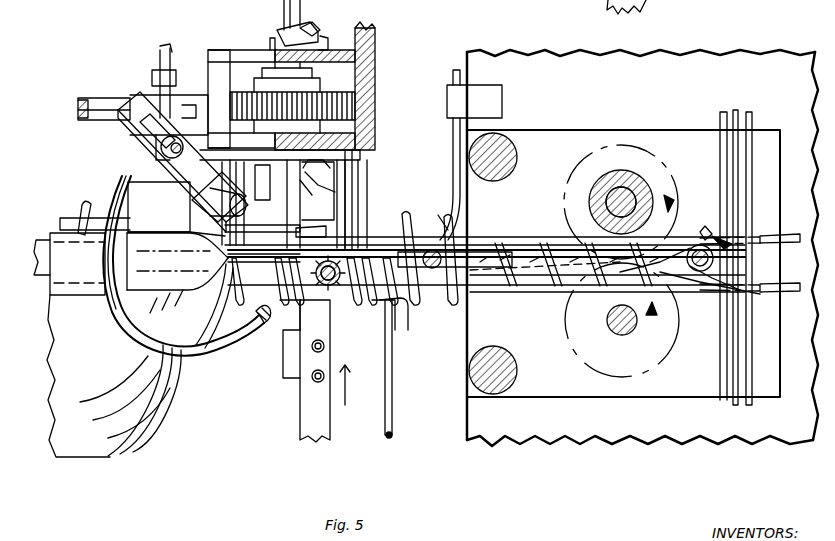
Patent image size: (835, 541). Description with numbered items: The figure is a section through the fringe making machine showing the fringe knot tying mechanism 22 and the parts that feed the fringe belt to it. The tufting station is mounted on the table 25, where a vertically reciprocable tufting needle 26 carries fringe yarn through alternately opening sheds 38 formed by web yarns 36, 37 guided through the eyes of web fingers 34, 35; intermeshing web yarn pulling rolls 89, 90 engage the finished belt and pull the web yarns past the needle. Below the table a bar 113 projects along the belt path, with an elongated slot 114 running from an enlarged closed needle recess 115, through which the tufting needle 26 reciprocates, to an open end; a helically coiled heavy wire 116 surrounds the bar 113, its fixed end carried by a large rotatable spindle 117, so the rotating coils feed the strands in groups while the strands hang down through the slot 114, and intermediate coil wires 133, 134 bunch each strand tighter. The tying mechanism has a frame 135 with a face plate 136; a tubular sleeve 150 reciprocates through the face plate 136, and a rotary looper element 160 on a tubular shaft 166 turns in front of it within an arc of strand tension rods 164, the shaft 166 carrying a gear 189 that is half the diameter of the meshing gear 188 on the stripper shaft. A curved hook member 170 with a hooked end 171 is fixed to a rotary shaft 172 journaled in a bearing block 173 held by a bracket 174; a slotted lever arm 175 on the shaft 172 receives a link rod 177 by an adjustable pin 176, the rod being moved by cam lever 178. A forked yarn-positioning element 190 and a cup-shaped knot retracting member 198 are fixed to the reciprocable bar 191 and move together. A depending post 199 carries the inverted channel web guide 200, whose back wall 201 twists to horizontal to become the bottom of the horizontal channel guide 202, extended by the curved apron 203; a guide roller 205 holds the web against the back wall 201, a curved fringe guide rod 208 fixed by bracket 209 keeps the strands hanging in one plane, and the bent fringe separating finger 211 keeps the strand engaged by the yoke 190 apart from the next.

The fringe knot tying mechanism 22 is at (199, 29).
The table 25 is at (642, 248).
The tufting needle 26 is at (702, 236).
The web finger 34 is at (738, 112).
The web finger 35 is at (754, 115).
The web yarn 36 is at (796, 232).
The web yarn 37 is at (796, 282).
The shed 38 is at (712, 228).
The web yarn pulling roll 89 is at (672, 342).
The web yarn pulling roll 90 is at (624, 140).
The bar 113 is at (495, 276).
The elongated slot 114 is at (528, 246).
The needle recess 115 is at (680, 278).
The helically coiled heavy wire 116 is at (430, 300).
The spindle 117 is at (66, 218).
The intermediate coil wire 133 is at (312, 300).
The intermediate coil wire 134 is at (355, 371).
The frame 135 is at (376, 42).
The face plate 136 is at (340, 132).
The tubular sleeve 150 is at (302, 26).
The looper element 160 is at (278, 170).
The strand tension rod 164 is at (340, 180).
The tubular shaft 166 is at (268, 36).
The hook member 170 is at (146, 332).
The hooked end 171 is at (251, 340).
The rotary shaft 172 is at (212, 202).
The bearing block 173 is at (176, 209).
The bracket 174 is at (354, 160).
The slotted lever arm 175 is at (138, 125).
The bolt or pin 176 is at (165, 152).
The link rod 177 is at (158, 54).
The lever 178 is at (284, 6).
The gear 188 is at (352, 105).
The gear 189 is at (320, 100).
The yarn-positioning element 190 is at (310, 232).
The reciprocable bar 191 is at (314, 418).
The knot retracting member 198 is at (261, 202).
The depending post 199 is at (444, 230).
The web guide 200 is at (478, 256).
The back wall 201 is at (366, 250).
The channel guide 202 is at (69, 264).
The apron 203 is at (78, 376).
The web guide roller 205 is at (372, 317).
The fringe guide rod 208 is at (452, 132).
The bracket 209 is at (474, 101).
The fringe separating finger 211 is at (394, 416).